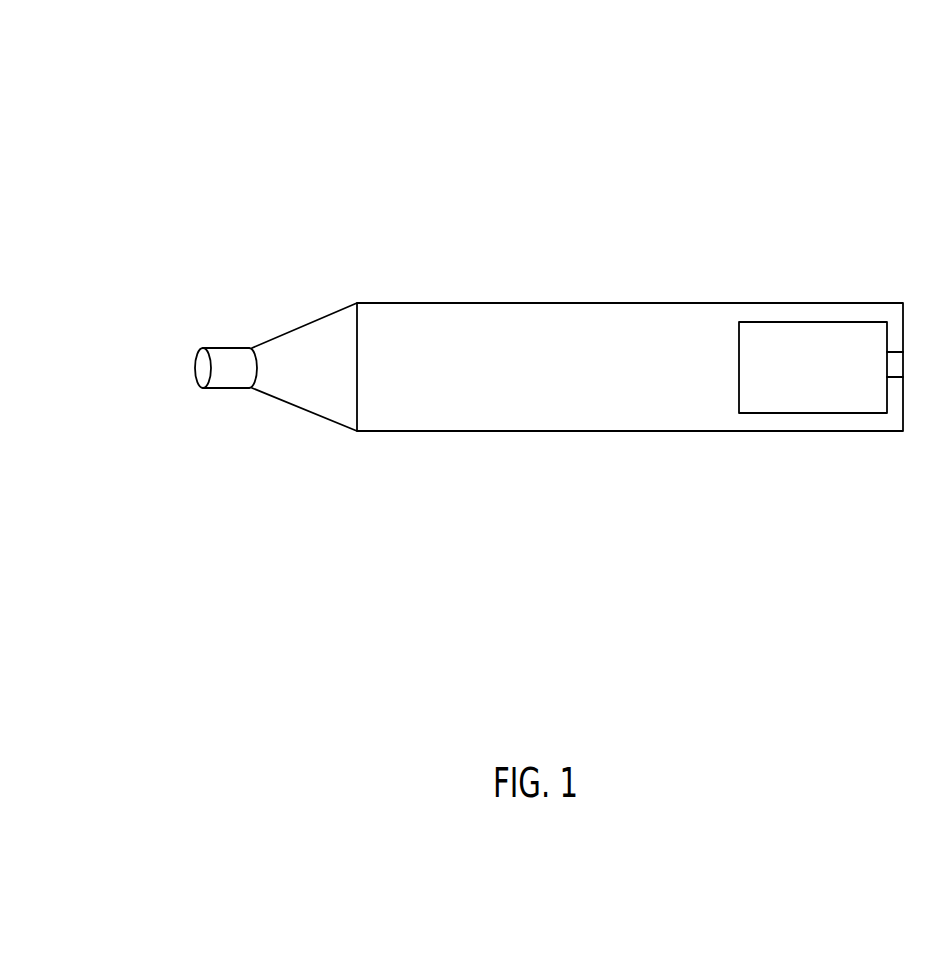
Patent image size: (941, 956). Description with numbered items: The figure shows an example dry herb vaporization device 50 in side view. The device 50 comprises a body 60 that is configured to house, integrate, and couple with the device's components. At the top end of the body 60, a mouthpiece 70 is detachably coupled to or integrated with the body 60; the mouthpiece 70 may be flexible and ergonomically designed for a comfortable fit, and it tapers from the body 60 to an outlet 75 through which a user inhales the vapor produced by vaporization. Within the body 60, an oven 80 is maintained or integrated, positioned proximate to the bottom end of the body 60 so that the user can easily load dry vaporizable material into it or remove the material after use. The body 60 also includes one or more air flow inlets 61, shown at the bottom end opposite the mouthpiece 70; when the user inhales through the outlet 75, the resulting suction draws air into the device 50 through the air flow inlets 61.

The dry herb vaporization device 50 is at (112, 142).
The body 60 is at (903, 436).
The air flow inlet 61 is at (895, 379).
The mouthpiece 70 is at (357, 297).
The outlet 75 is at (198, 366).
The oven 80 is at (843, 322).